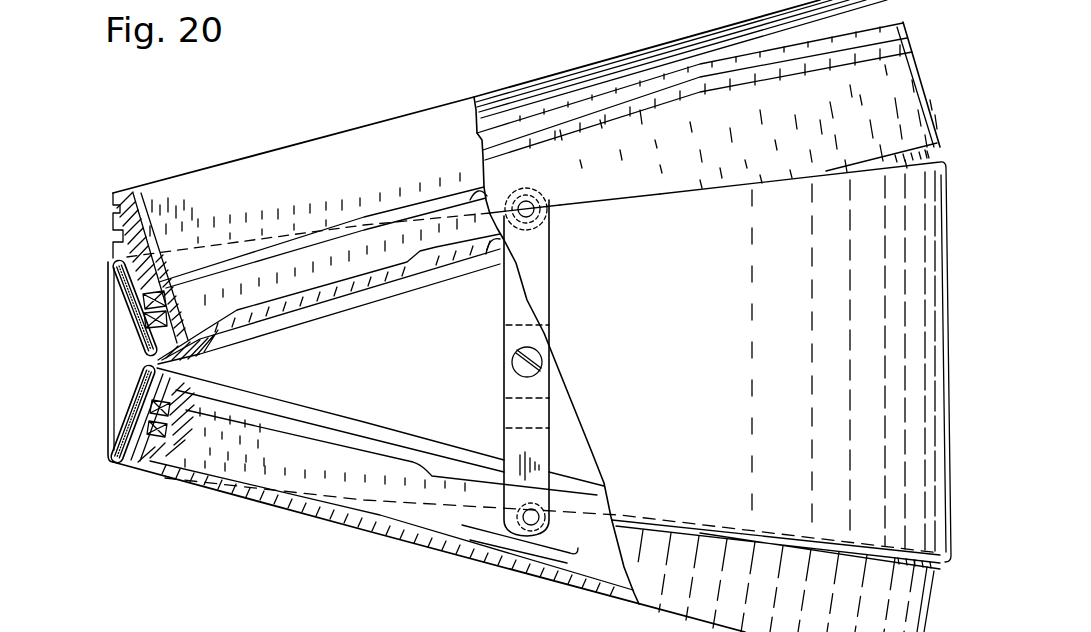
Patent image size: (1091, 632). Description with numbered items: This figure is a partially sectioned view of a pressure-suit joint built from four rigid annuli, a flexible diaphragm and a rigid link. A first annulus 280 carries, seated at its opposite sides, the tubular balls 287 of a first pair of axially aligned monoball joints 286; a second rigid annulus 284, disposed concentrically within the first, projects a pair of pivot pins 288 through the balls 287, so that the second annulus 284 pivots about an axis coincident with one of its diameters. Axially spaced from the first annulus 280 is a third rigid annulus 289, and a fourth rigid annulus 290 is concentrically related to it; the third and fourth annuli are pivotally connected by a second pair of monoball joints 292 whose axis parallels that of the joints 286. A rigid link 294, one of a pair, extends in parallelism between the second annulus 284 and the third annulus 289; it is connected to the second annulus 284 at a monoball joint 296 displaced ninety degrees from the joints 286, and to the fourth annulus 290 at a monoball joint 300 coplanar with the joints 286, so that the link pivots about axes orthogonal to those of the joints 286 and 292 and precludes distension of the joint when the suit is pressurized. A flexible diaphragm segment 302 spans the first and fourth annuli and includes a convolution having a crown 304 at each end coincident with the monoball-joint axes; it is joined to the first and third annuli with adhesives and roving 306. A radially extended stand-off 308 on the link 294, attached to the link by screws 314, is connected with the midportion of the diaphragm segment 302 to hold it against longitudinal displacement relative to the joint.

The first annulus 280 is at (233, 178).
The second rigid annulus 284 is at (342, 263).
The monoball joints 286 is at (158, 362).
The tubular ball 287 is at (160, 275).
The pivot pins 288 is at (125, 321).
The third rigid annulus 289 is at (233, 487).
The fourth rigid annulus 290 is at (320, 480).
The monoball joints 292 is at (142, 467).
The rigid link 294 is at (517, 445).
The monoball joints 296 is at (537, 213).
The monoball joints 300 is at (511, 525).
The flexible diaphragm segment 302 is at (108, 388).
The crown 304 is at (114, 258).
The roving 306 is at (130, 289).
The stand-off 308 is at (504, 357).
The screws 314 is at (521, 363).